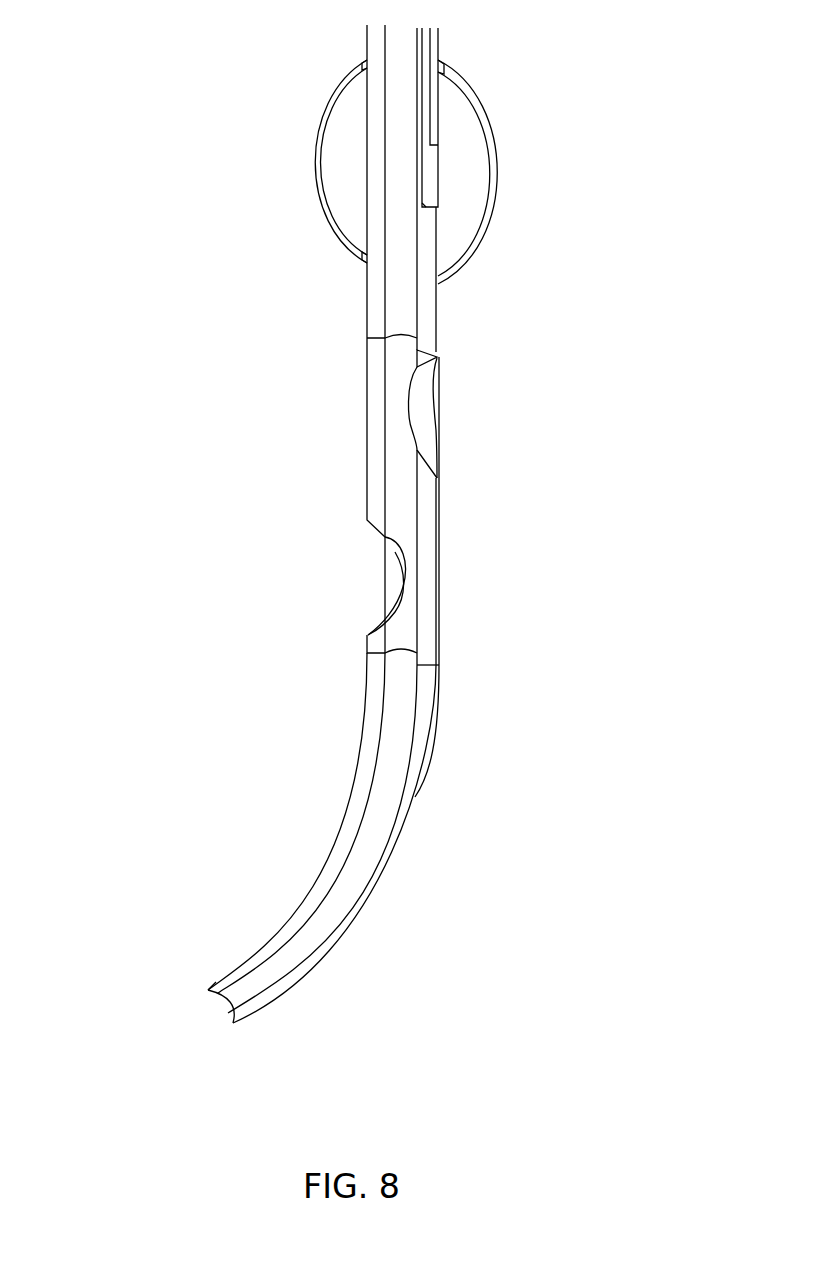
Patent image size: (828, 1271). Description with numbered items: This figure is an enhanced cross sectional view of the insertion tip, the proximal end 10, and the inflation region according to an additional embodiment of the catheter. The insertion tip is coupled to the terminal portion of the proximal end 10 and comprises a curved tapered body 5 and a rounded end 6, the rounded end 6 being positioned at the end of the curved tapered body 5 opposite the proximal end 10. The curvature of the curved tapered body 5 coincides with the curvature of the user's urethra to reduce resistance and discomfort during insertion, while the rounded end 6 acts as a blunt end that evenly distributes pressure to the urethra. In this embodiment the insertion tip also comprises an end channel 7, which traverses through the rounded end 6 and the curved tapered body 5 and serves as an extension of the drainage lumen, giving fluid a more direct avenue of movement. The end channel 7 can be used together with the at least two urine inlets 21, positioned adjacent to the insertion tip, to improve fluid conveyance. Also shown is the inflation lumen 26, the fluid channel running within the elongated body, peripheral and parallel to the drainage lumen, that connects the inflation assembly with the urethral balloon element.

The proximal end 10 is at (367, 408).
The at least two urine inlets 21 is at (446, 417).
The inflation lumen 26 is at (409, 627).
The curved tapered body 5 is at (415, 798).
The rounded end 6 is at (218, 978).
The end channel 7 is at (217, 1007).